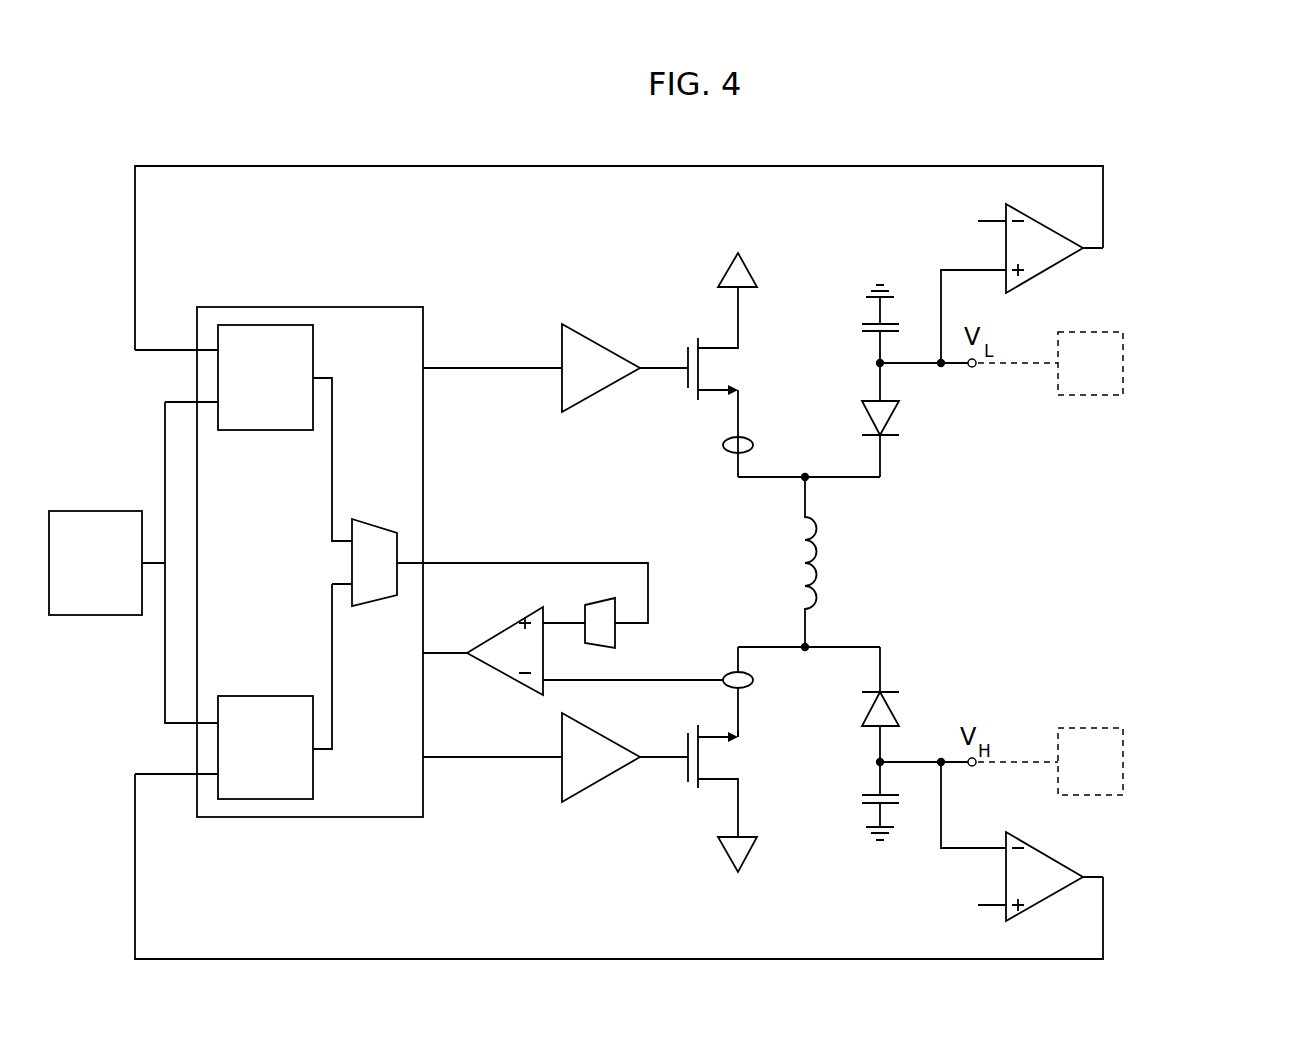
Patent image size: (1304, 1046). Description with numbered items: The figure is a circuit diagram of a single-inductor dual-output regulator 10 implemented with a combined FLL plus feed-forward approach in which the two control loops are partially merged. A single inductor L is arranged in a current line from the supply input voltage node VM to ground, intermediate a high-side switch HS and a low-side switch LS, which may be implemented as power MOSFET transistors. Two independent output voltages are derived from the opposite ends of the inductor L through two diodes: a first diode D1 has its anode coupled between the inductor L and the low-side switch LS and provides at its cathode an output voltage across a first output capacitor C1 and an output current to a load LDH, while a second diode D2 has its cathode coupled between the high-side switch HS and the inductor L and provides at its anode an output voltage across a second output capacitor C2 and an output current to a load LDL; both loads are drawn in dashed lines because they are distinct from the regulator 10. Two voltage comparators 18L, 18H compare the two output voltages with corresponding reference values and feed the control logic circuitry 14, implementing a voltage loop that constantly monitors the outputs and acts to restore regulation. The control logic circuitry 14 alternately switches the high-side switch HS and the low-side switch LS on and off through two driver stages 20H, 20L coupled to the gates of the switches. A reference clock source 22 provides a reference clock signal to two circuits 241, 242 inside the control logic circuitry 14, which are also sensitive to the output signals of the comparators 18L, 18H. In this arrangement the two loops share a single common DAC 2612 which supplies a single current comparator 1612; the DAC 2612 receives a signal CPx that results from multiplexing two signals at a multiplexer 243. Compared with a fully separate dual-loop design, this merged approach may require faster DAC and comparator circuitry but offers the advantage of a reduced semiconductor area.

The single-inductor dual-output (SIDO) regulator 10 is at (1222, 158).
The control logic circuitry 14 is at (205, 750).
The reference clock source 22 is at (83, 603).
The circuit in the logic control circuitry 241 is at (260, 338).
The circuit in the logic control circuitry 242 is at (255, 782).
The multiplexer 243 is at (368, 565).
The current comparator 1612 is at (490, 656).
The common DAC 2612 is at (603, 633).
The driver stage 20H is at (565, 348).
The driver stage 20L is at (562, 780).
The voltage comparator 18L is at (1050, 258).
The voltage comparator 18H is at (1058, 862).
The high-side switch HS is at (742, 368).
The low-side switch LS is at (742, 761).
The supply input voltage node VM is at (725, 278).
The inductor L is at (812, 560).
The first diode D1 is at (860, 704).
The second diode D2 is at (862, 420).
The first output capacitor C1 is at (868, 804).
The second output capacitor C2 is at (865, 320).
The multiplexed signal CPx is at (527, 562).
The load LDL is at (1123, 363).
The load LDH is at (1123, 762).